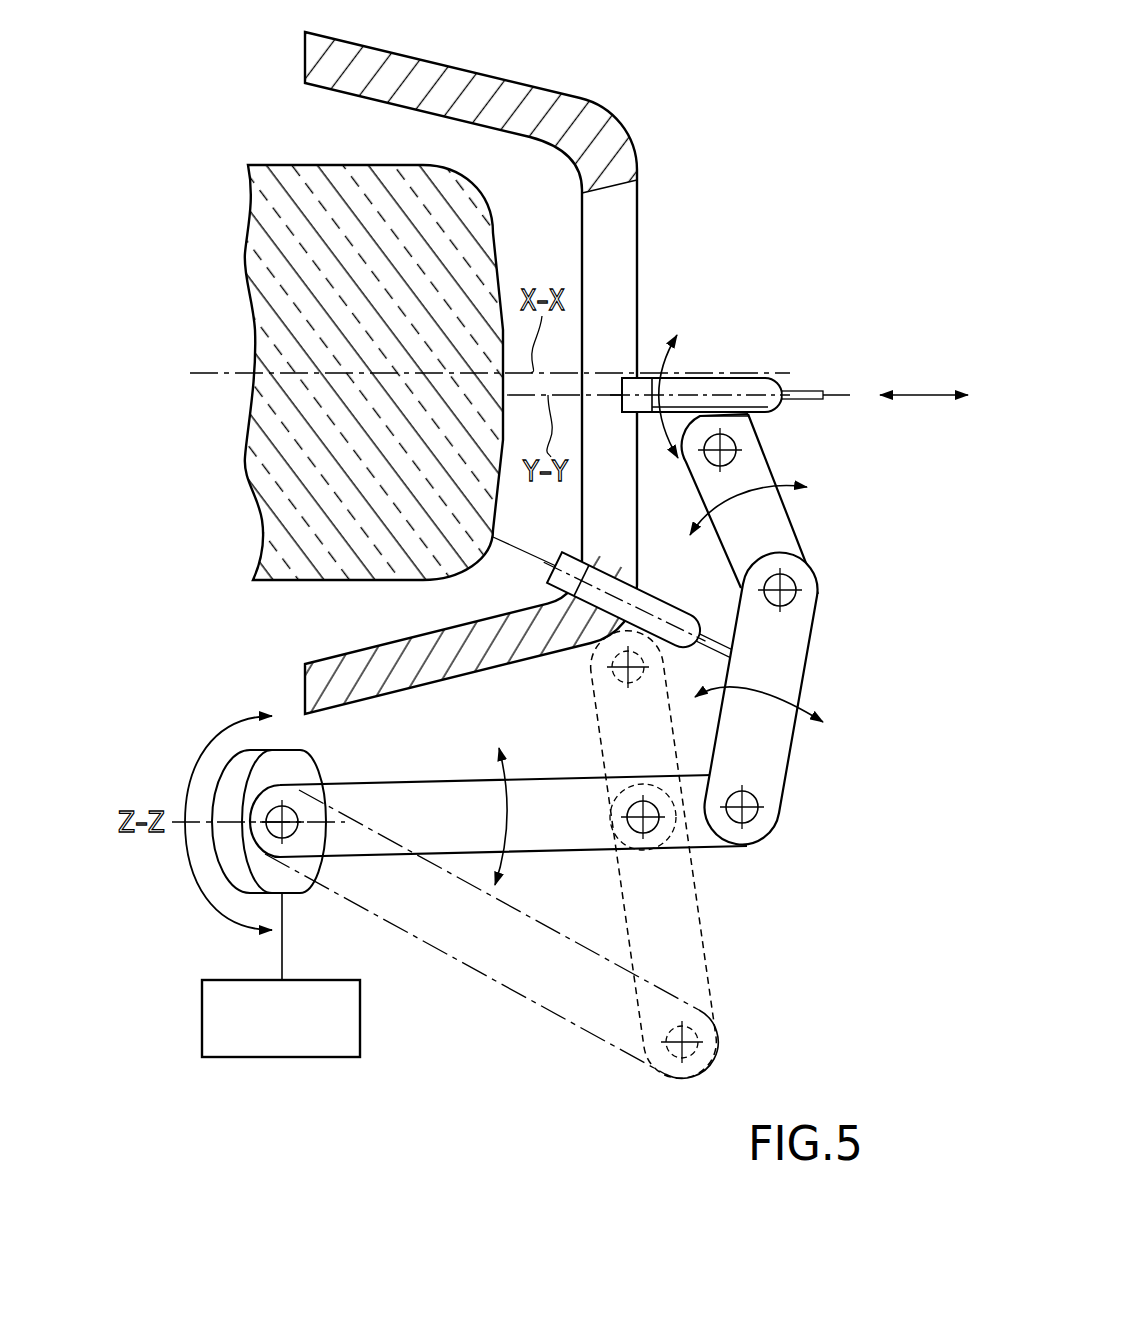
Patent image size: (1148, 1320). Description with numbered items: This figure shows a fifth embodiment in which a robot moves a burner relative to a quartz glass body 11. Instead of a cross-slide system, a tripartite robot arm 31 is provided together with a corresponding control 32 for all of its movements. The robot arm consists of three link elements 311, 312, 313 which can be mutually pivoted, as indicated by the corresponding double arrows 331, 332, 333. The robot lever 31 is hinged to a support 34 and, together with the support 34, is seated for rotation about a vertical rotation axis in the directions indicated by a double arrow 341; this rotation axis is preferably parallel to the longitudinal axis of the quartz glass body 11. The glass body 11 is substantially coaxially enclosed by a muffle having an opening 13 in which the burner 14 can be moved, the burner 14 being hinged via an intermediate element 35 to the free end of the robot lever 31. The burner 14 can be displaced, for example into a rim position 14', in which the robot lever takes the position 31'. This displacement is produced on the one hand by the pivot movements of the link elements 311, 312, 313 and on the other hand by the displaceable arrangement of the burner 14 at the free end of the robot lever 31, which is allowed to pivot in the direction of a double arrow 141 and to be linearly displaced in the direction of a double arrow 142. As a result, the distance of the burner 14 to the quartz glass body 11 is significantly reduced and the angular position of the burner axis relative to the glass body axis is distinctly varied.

The quartz glass body 11 is at (384, 296).
The opening 13 is at (607, 243).
The burner 14 is at (716, 345).
The rim position 14' is at (641, 610).
The double arrow 141 is at (674, 360).
The double arrow 142 is at (922, 394).
The intermediate element 35 is at (748, 416).
The tripartite robot arm 31 is at (592, 652).
The position of the robot lever 31' is at (581, 855).
The link element 311 is at (473, 832).
The link element 312 is at (768, 763).
The link element 313 is at (753, 468).
The double arrow 331 is at (503, 767).
The double arrow 332 is at (772, 690).
The double arrow 333 is at (752, 493).
The support 34 is at (297, 768).
The double arrow 341 is at (211, 741).
The control 32 is at (300, 1035).